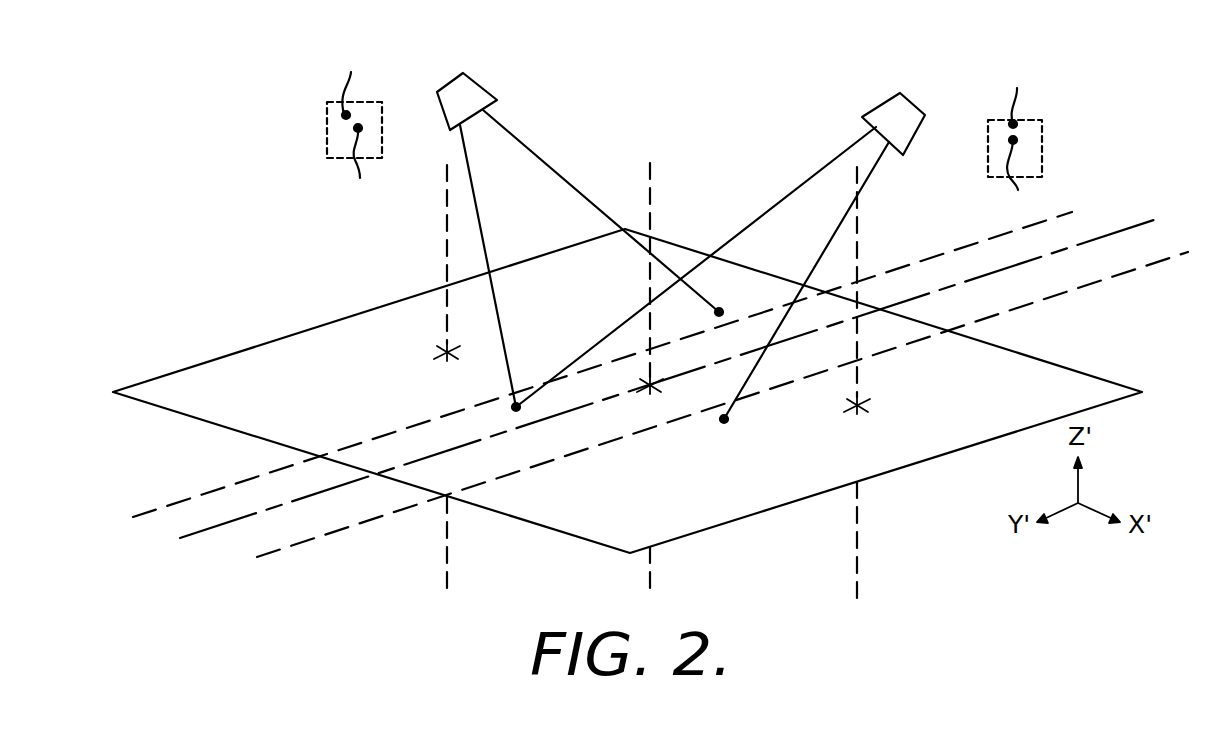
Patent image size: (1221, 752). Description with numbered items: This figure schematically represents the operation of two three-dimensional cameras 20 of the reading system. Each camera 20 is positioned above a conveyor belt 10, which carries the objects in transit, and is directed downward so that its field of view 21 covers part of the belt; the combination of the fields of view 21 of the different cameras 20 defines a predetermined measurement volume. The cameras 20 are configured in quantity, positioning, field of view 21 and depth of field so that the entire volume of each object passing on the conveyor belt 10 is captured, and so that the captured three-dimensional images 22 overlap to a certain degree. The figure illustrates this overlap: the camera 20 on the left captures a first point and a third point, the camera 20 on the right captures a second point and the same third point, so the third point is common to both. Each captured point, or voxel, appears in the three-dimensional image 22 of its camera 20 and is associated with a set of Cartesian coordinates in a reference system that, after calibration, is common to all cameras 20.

The conveyor belt 10 is at (228, 499).
The camera 20 is at (476, 78).
The field of view 21 is at (539, 158).
The three-dimensional image 22 is at (327, 120).